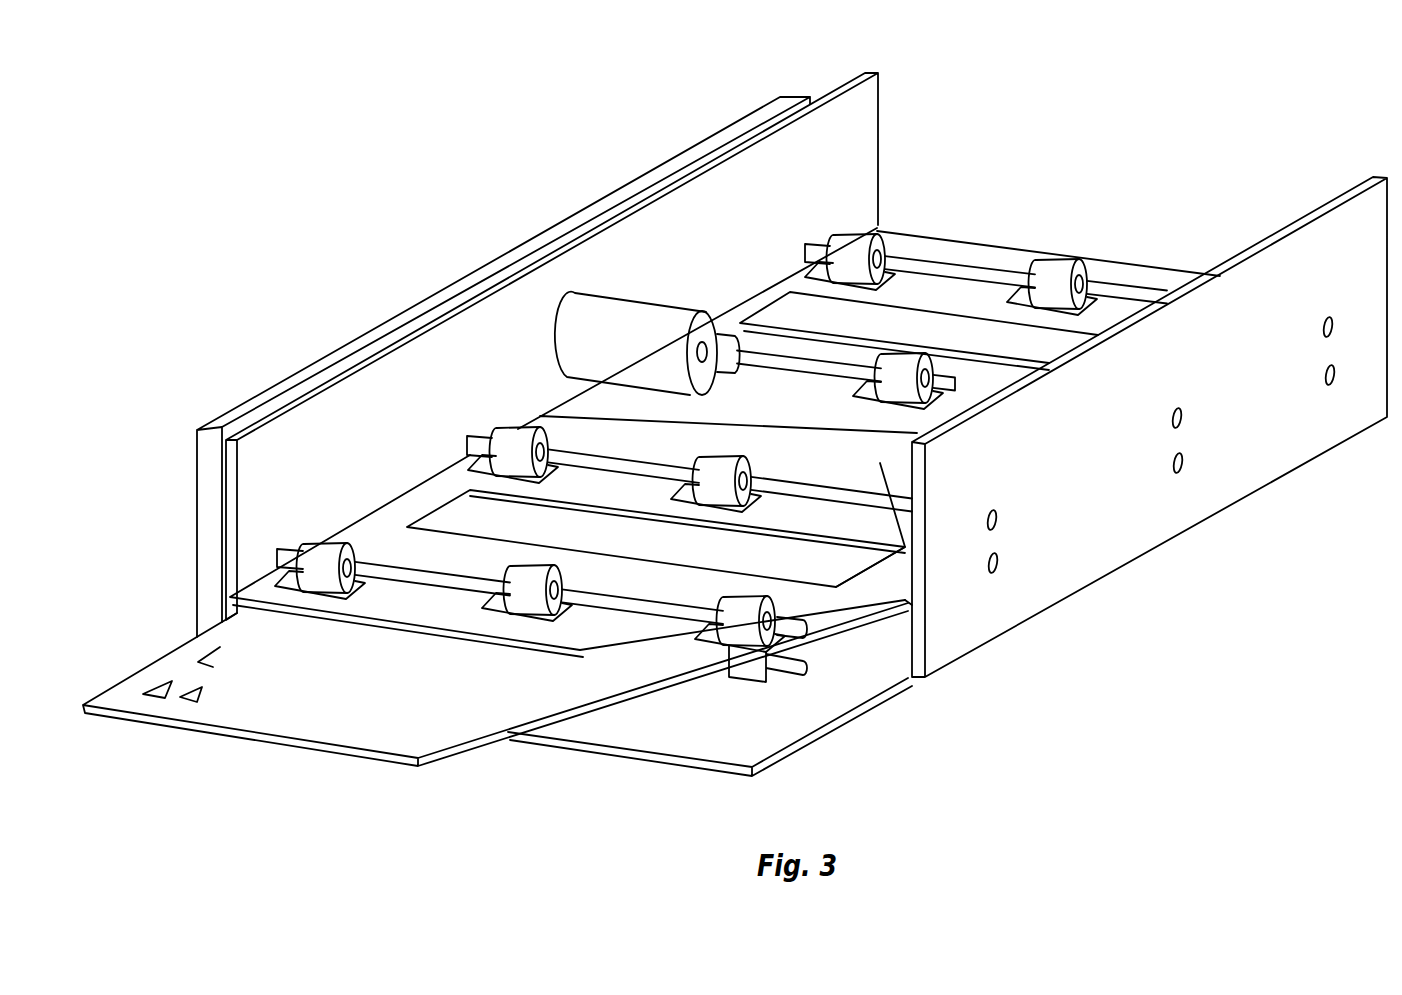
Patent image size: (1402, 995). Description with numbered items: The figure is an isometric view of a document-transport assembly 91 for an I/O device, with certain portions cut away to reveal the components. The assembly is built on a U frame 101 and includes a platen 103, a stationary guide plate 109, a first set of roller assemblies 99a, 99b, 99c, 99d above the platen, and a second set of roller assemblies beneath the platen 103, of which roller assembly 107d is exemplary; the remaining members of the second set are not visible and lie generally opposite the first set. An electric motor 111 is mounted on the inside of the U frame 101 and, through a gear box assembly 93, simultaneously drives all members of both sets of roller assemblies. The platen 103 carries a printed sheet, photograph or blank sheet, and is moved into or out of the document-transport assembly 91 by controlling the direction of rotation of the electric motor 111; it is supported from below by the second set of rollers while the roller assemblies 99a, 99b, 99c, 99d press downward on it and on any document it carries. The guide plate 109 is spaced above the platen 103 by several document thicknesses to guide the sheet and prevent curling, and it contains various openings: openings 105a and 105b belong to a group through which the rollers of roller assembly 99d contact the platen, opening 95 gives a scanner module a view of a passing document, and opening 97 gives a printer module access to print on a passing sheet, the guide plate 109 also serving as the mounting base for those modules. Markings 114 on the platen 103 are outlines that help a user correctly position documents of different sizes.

The document-transport assembly 91 is at (386, 92).
The gear box assembly 93 is at (712, 148).
The opening 95 is at (473, 513).
The opening 97 is at (800, 318).
The roller assembly 99a is at (1063, 273).
The roller assembly 99b is at (903, 395).
The roller assembly 99c is at (722, 483).
The roller assembly 99d is at (313, 560).
The U frame 101 is at (1358, 183).
The platen 103 is at (618, 668).
The opening 105a is at (294, 580).
The opening 105b is at (530, 620).
The roller assembly 107d is at (753, 668).
The guide plate 109 is at (880, 463).
The electric motor 111 is at (587, 317).
The markings 114 is at (167, 684).